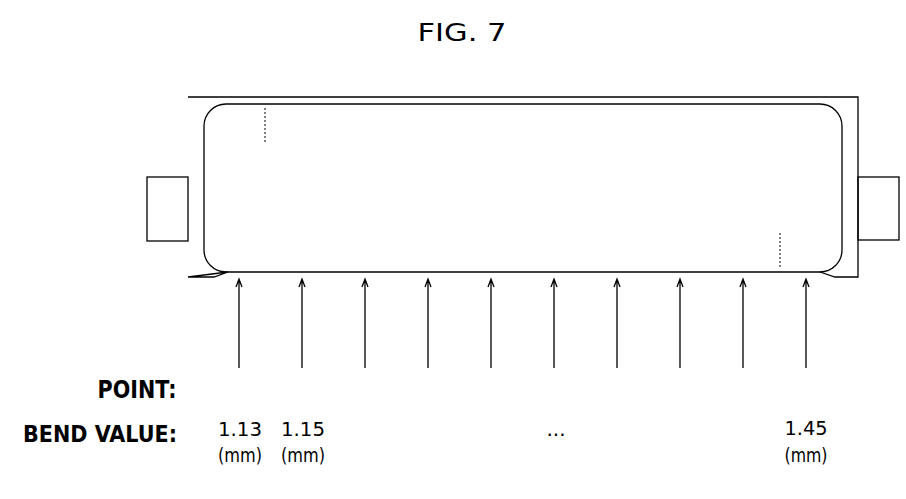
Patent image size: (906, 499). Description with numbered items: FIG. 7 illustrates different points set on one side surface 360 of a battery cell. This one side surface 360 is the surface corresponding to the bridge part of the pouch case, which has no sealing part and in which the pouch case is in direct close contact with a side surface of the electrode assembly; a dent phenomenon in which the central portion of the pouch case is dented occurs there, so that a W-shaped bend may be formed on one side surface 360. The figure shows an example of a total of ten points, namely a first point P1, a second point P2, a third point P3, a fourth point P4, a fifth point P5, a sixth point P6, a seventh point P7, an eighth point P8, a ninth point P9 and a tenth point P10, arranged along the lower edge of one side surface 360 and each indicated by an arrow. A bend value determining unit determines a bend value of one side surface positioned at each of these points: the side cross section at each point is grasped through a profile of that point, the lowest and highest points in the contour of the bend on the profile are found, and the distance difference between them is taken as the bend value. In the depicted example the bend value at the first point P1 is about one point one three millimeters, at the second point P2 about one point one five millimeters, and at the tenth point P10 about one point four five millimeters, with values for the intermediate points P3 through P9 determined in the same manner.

The one side surface of the battery cell 360 is at (222, 281).
The first point P1 is at (239, 341).
The second point P2 is at (302, 341).
The third point P3 is at (365, 341).
The fourth point P4 is at (428, 341).
The fifth point P5 is at (491, 340).
The sixth point P6 is at (554, 341).
The seventh point P7 is at (617, 341).
The eighth point P8 is at (680, 341).
The ninth point P9 is at (743, 341).
The tenth point P10 is at (806, 341).